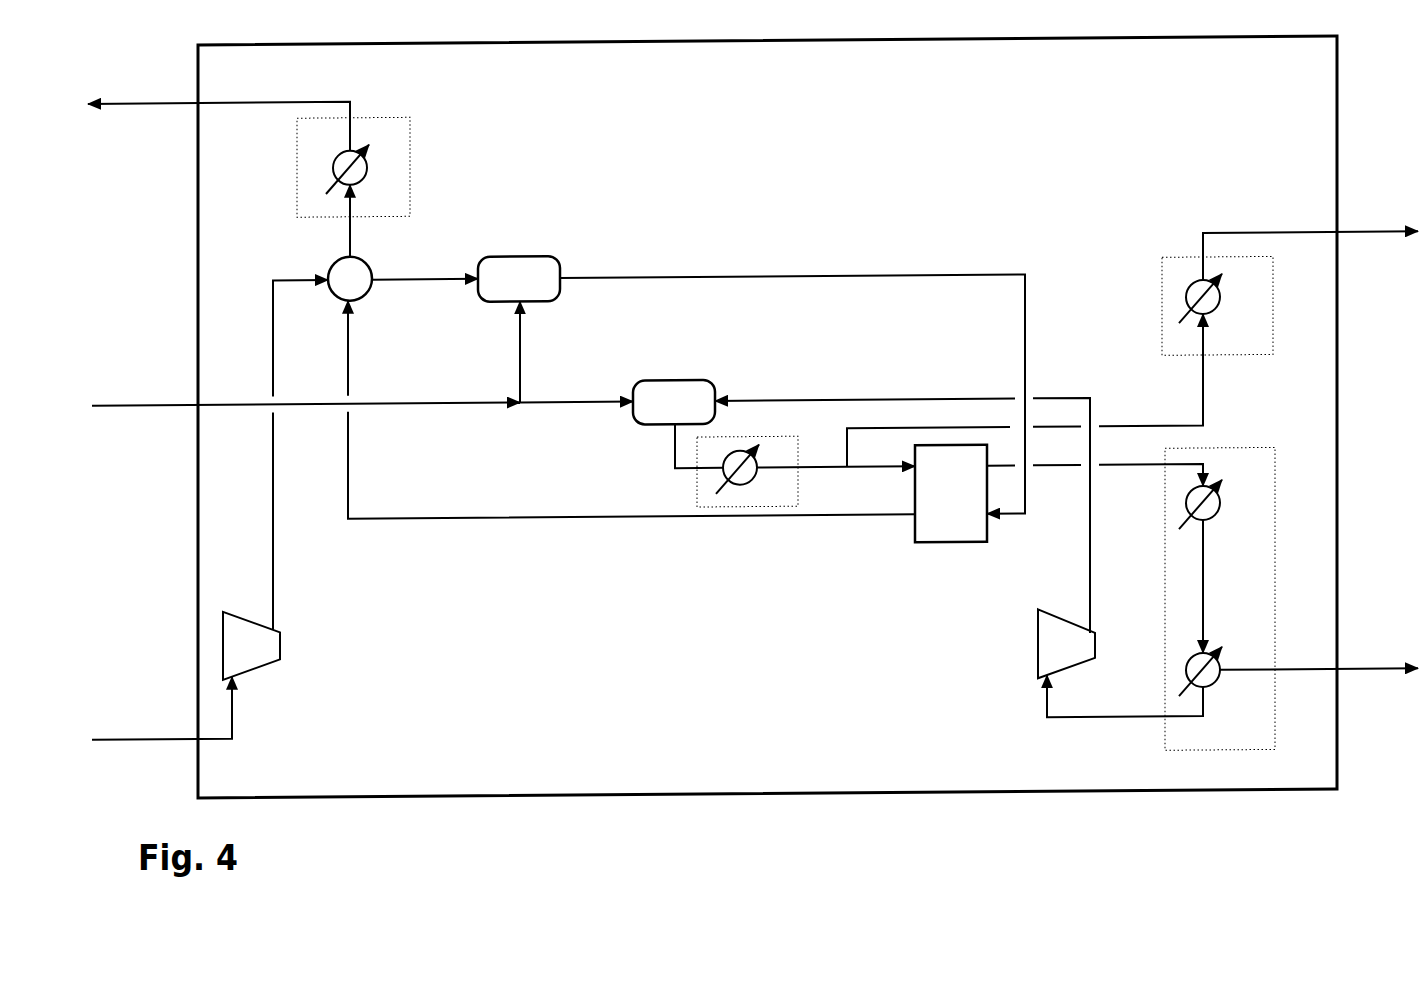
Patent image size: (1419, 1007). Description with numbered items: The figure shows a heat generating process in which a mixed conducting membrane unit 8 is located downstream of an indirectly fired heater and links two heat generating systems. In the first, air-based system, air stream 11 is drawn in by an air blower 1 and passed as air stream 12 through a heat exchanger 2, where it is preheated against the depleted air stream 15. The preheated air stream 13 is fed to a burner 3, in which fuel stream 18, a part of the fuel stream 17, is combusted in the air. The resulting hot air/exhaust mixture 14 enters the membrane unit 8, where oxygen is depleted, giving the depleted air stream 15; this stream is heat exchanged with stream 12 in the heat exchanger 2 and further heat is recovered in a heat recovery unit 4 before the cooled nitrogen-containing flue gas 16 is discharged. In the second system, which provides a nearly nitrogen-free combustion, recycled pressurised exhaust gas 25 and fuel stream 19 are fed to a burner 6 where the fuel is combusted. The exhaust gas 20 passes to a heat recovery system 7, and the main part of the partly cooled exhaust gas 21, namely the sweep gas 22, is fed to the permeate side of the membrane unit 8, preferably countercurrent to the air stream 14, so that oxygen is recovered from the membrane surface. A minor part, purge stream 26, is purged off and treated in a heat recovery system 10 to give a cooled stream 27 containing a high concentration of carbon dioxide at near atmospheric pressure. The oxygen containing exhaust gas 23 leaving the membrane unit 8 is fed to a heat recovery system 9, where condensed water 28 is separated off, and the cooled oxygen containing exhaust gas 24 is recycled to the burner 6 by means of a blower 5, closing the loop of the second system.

The air blower 1 is at (251, 645).
The heat exchanger 2 is at (350, 279).
The burner 3 is at (519, 279).
The heat recovery unit 4 is at (353, 187).
The blower 5 is at (1066, 643).
The burner 6 is at (674, 402).
The heat recovery system 7 is at (747, 471).
The mixed conducting membrane unit 8 is at (951, 494).
The heat recovery system 9 is at (1220, 598).
The heat recovery system 10 is at (1217, 305).
The air stream 11 is at (162, 715).
The air stream 12 is at (294, 455).
The preheated air stream 13 is at (425, 281).
The hot air/exhaust mixture 14 is at (792, 390).
The depleted air stream 15 is at (631, 414).
The cooled nitrogen-containing exhaust or flue gas 16 is at (219, 122).
The fuel stream 17 is at (306, 404).
The fuel stream 18 is at (520, 351).
The fuel stream 19 is at (576, 404).
The exhaust gas 20 is at (692, 446).
The partly cooled exhaust gas 21 is at (802, 468).
The sweep gas 22 is at (881, 467).
The oxygen containing exhaust gas 23 is at (1095, 470).
The cooled oxygen containing exhaust gas 24 is at (1125, 701).
The recycled pressurised exhaust gas 25 is at (910, 517).
The purged exhaust gas 26 is at (1033, 390).
The cooled CO2-rich stream 27 is at (1310, 248).
The condensed water 28 is at (1319, 669).